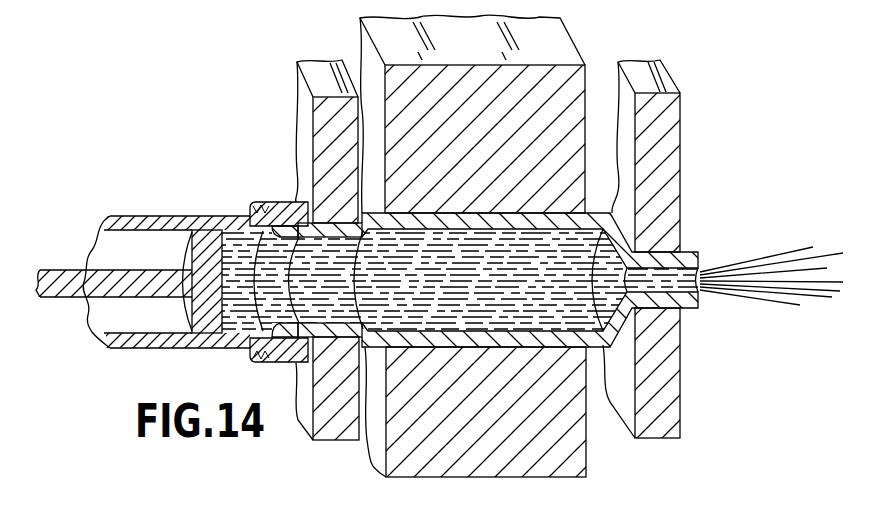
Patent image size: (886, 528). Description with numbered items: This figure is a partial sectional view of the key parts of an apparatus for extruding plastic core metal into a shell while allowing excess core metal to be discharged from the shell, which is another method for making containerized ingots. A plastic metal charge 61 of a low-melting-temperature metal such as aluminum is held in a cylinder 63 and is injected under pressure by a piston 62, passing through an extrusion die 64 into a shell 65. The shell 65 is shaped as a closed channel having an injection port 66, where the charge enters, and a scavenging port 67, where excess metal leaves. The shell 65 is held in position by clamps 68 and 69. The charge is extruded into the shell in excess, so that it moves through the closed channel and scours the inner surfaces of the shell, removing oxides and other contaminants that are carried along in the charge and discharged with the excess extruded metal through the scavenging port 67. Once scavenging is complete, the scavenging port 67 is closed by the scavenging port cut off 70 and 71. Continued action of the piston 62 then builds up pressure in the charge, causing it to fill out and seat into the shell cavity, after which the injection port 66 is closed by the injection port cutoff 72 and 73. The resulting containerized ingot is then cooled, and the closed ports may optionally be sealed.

The plastic metal charge 61 is at (240, 285).
The piston 62 is at (210, 305).
The cylinder 63 is at (182, 215).
The extrusion die 64 is at (263, 202).
The shell 65 is at (601, 355).
The injection port 66 is at (337, 228).
The scavenging port 67 is at (690, 280).
The clamp 68 is at (533, 72).
The clamp 69 is at (525, 463).
The scavenging port cut off 70 is at (672, 138).
The scavenging port cut off 71 is at (667, 355).
The injection port cutoff 72 is at (323, 115).
The injection port cutoff 73 is at (340, 425).